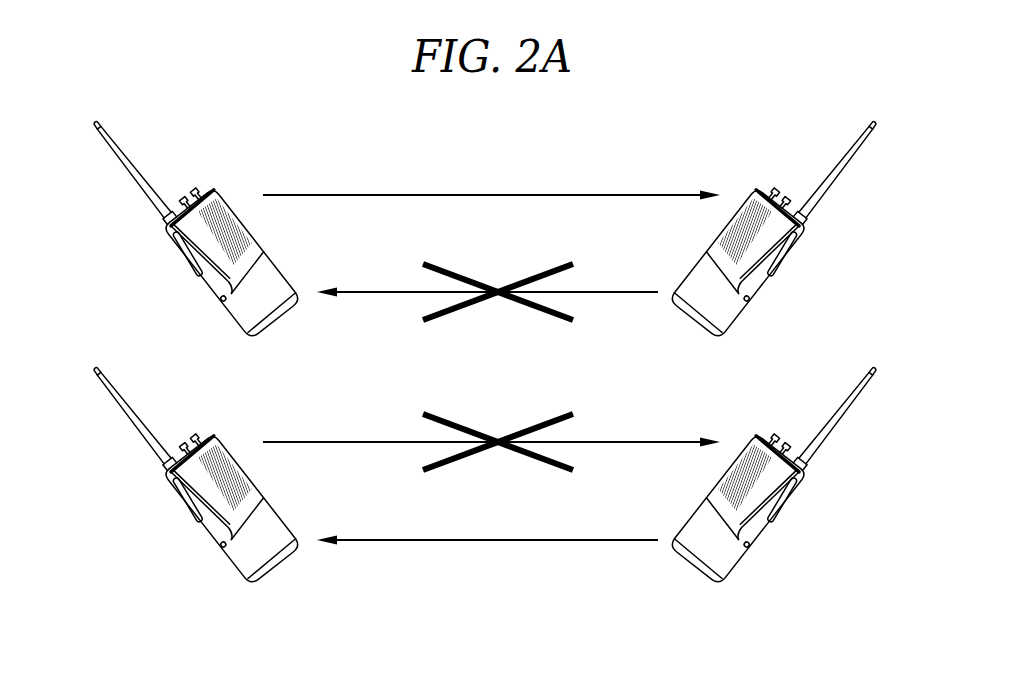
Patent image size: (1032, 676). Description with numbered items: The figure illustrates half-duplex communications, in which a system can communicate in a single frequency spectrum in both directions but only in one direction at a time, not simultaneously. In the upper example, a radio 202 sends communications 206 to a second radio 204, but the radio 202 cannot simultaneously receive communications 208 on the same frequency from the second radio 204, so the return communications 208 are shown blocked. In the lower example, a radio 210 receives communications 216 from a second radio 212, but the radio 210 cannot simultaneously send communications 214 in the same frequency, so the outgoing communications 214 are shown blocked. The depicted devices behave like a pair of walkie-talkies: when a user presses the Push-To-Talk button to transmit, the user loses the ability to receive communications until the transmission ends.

The radio 202 is at (166, 231).
The second radio 204 is at (804, 229).
The communications 206 is at (505, 193).
The communications 208 is at (538, 274).
The radio 210 is at (178, 502).
The second radio 212 is at (796, 510).
The communications 214 is at (543, 422).
The communications 216 is at (505, 538).